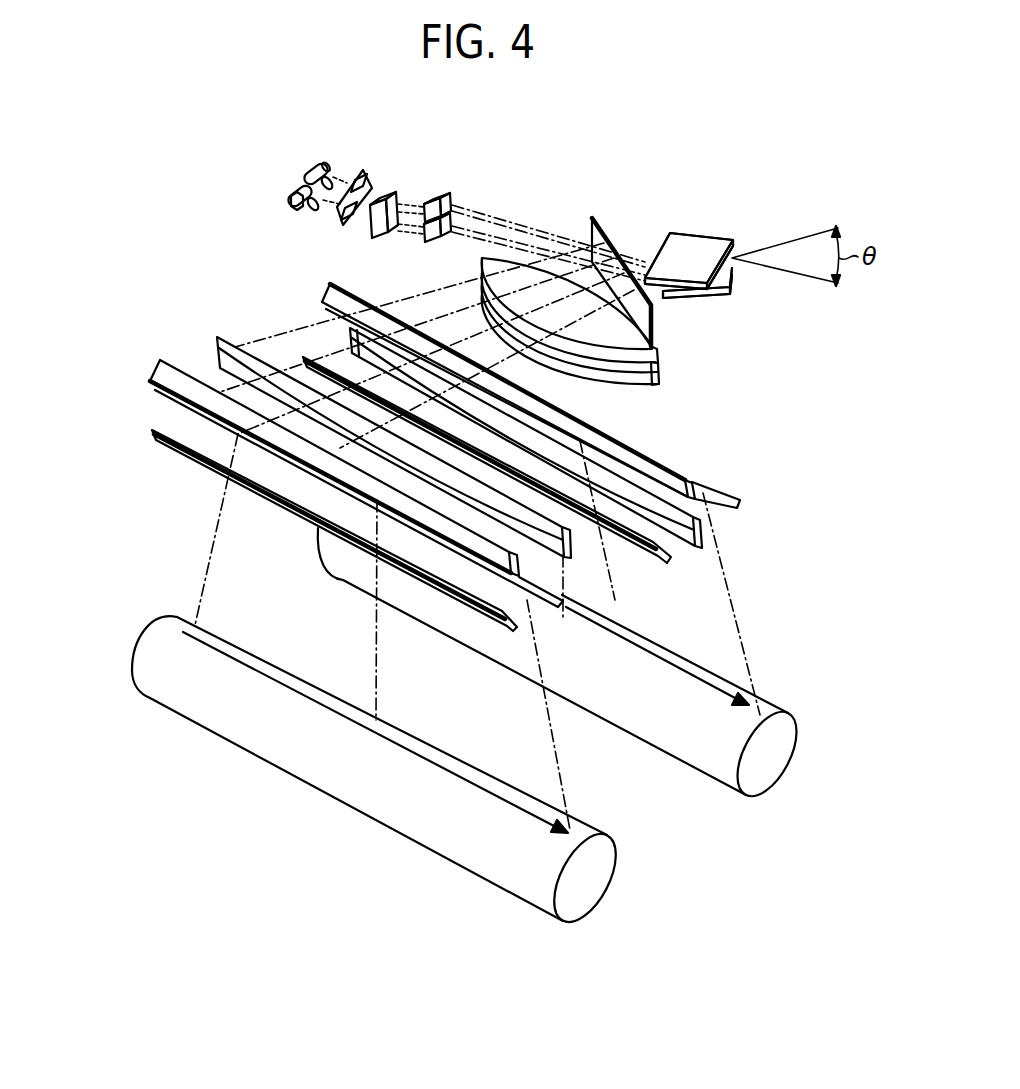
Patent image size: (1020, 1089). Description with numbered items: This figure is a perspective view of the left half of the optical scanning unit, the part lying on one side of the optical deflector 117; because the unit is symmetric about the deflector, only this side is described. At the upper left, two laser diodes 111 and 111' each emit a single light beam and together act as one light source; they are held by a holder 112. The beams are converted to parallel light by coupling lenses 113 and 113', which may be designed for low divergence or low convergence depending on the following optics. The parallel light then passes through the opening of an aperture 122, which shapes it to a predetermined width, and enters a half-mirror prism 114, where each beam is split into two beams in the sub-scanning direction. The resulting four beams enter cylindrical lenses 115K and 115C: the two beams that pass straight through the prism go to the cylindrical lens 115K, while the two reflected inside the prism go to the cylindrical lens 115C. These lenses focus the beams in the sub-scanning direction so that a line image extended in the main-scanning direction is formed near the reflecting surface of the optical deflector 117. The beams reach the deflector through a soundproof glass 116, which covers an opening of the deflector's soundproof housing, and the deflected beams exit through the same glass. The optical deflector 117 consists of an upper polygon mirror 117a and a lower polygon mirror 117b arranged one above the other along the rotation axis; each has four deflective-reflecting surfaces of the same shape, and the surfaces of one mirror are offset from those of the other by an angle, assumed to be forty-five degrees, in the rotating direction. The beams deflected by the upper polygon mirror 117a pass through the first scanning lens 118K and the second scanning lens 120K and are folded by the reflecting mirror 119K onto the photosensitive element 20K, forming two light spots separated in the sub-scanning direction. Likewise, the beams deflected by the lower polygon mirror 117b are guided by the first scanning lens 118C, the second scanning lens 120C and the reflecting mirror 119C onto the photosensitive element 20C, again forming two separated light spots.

The laser diode 111 is at (292, 160).
The laser diode 111' is at (276, 192).
The holder 112 is at (322, 165).
The coupling lens 113 is at (348, 165).
The coupling lens 113' is at (300, 230).
The aperture 122 is at (368, 178).
The half-mirror prism 114 is at (397, 194).
The cylindrical lens 115K is at (443, 200).
The cylindrical lens 115C is at (428, 240).
The soundproof glass 116 is at (608, 234).
The optical deflector 117 is at (688, 221).
The polygon mirror 117a is at (713, 240).
The polygon mirror 117b is at (717, 288).
The first scanning lens 118K is at (652, 358).
The first scanning lens 118C is at (657, 380).
The reflecting mirror 119K is at (153, 427).
The reflecting mirror 119C is at (387, 302).
The second scanning lens 120K is at (217, 347).
The second scanning lens 120C is at (350, 338).
The photosensitive element 20K is at (388, 818).
The photosensitive element 20C is at (623, 723).